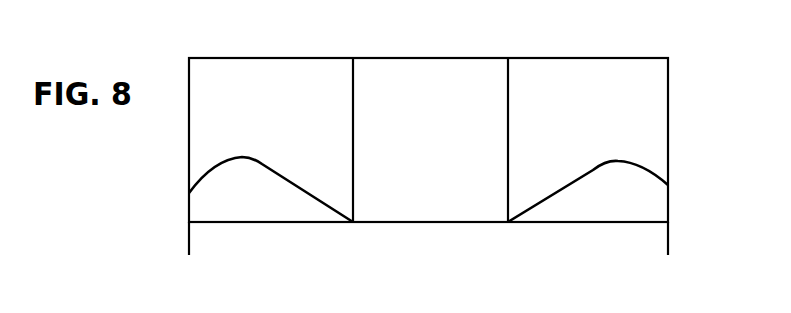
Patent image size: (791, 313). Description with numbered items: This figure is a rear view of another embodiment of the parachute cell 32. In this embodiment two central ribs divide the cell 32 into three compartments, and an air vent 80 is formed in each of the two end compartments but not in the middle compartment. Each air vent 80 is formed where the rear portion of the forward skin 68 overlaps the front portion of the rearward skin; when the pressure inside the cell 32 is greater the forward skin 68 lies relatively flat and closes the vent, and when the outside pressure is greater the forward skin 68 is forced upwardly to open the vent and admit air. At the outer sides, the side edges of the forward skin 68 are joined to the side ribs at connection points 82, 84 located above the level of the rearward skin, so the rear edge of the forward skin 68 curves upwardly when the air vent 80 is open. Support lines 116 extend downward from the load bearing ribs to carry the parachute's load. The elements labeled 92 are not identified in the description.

The cell 32 is at (425, 55).
The forward skin 68 is at (257, 160).
The air inlet vent 80 is at (270, 207).
The connection point 82 is at (189, 190).
The connection point 84 is at (668, 185).
The divider edge 92 is at (353, 222).
The support lines 116 is at (188, 239).